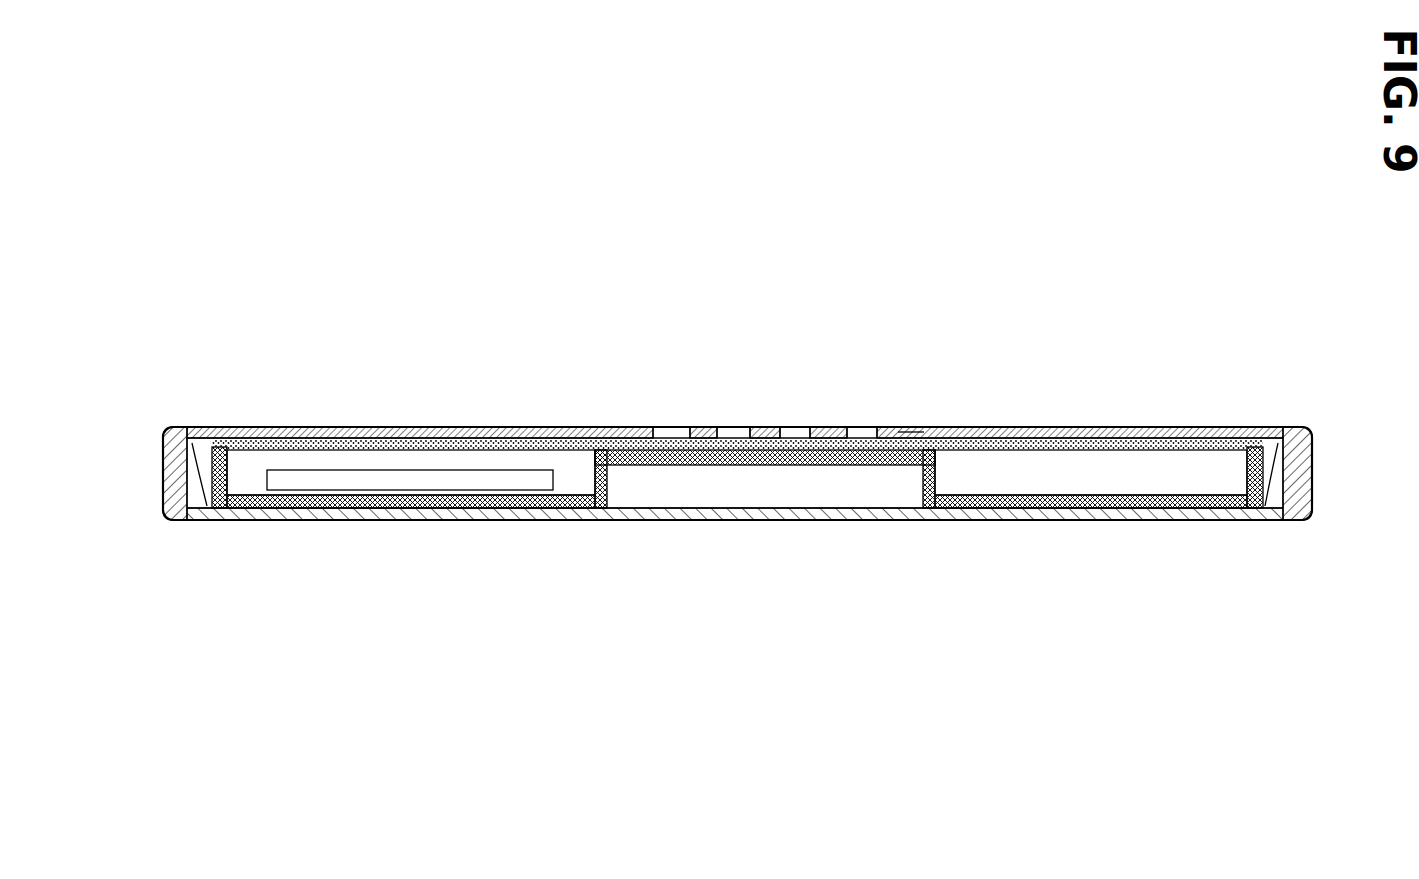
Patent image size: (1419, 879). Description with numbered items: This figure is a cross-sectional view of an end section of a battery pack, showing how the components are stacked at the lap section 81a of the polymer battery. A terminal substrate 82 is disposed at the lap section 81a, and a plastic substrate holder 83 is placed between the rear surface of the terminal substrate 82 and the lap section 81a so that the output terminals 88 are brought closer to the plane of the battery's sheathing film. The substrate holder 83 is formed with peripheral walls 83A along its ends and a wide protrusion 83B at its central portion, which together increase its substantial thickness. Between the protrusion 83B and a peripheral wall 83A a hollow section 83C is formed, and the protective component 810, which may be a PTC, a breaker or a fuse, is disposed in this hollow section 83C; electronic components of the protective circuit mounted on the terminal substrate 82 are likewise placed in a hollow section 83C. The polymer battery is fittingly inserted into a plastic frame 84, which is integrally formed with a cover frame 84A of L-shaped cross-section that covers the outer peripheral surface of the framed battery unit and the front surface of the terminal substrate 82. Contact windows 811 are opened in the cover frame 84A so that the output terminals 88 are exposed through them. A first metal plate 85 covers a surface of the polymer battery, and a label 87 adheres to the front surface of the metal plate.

The lap section 81a is at (190, 427).
The terminal substrate 82 is at (574, 450).
The substrate holder 83 is at (1085, 507).
The peripheral wall 83A is at (233, 478).
The protrusion 83B is at (725, 465).
The hollow section 83C is at (449, 448).
The plastic frame 84 is at (163, 500).
The cover frame 84A is at (912, 427).
The first metal plate 85 is at (295, 430).
The label 87 is at (640, 520).
The output terminal 88 is at (663, 428).
The protective component 810 is at (360, 484).
The contact window 811 is at (685, 421).